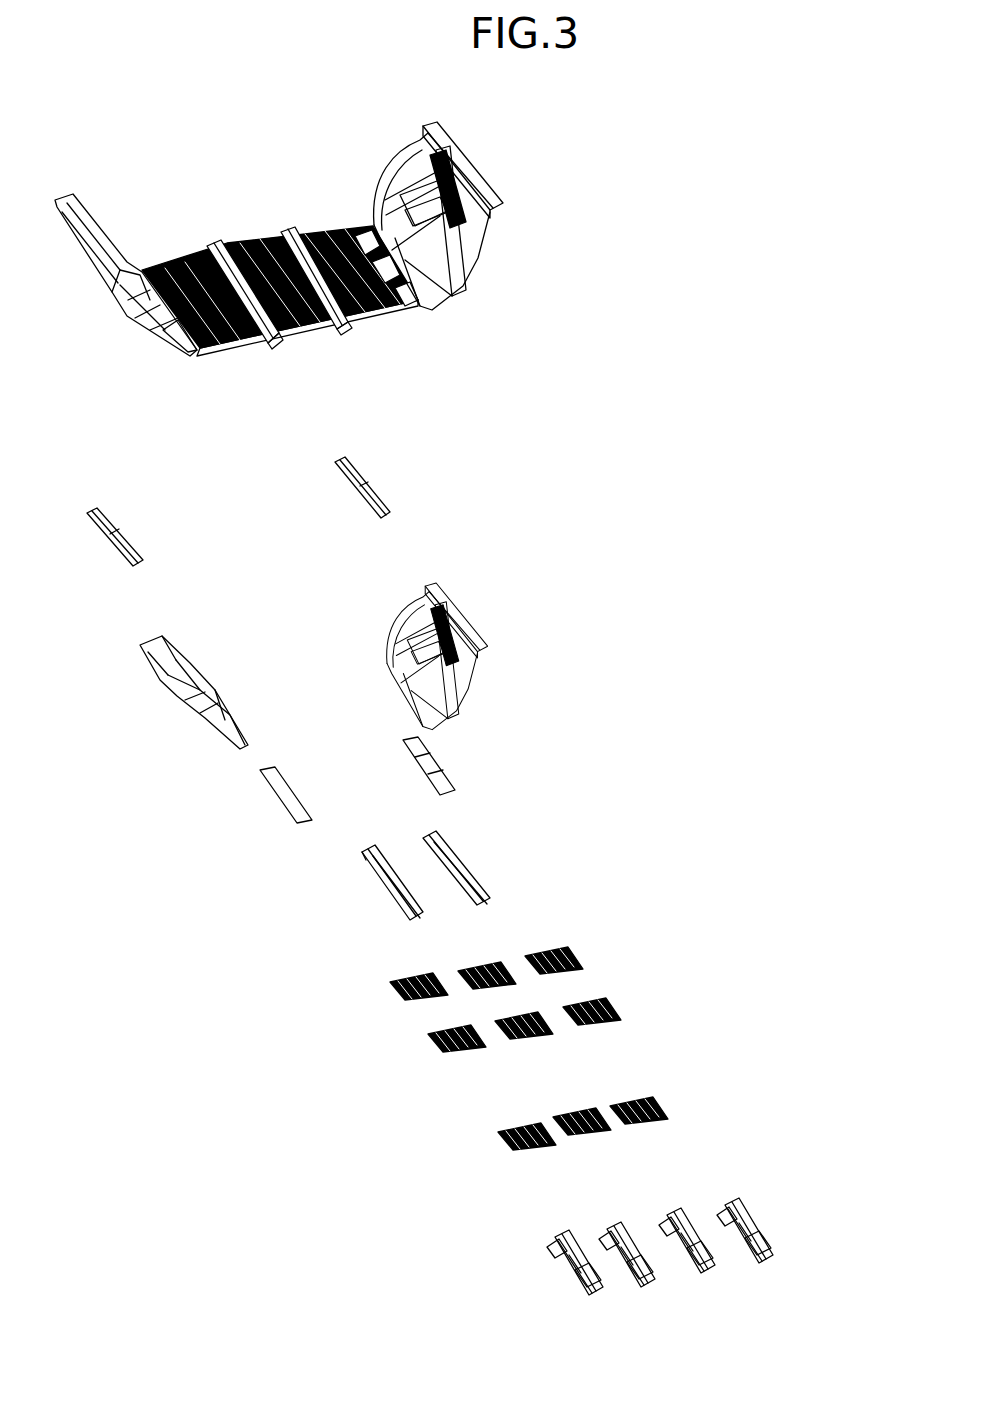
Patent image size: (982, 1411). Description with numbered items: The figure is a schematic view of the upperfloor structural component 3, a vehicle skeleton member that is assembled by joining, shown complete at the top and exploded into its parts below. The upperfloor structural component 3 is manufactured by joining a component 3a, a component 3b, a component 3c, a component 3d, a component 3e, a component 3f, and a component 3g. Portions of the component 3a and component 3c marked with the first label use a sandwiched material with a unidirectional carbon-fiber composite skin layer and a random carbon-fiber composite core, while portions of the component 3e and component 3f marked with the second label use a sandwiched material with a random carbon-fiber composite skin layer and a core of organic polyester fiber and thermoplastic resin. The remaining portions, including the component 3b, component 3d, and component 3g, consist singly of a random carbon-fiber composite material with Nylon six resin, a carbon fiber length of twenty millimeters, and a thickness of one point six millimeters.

The upperfloor structural component 3 is at (462, 240).
The component 3a is at (93, 511).
The component 3b is at (415, 670).
The component 3c is at (425, 773).
The component 3d is at (460, 897).
The component 3e is at (430, 974).
The component 3f is at (547, 1118).
The component 3g is at (573, 1233).